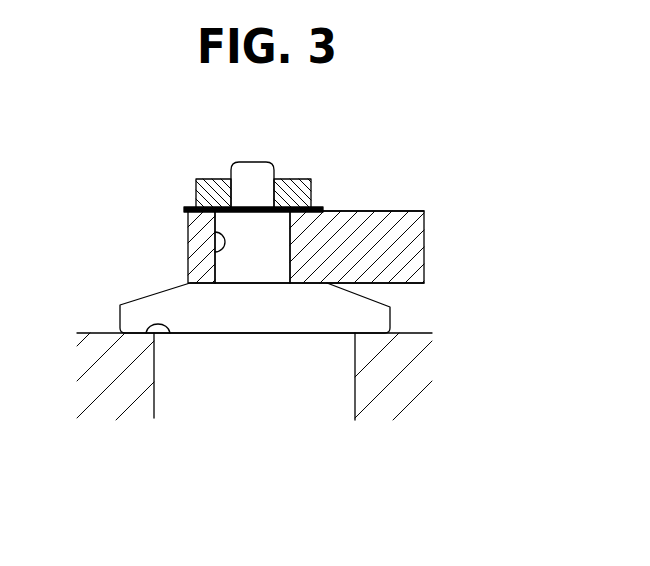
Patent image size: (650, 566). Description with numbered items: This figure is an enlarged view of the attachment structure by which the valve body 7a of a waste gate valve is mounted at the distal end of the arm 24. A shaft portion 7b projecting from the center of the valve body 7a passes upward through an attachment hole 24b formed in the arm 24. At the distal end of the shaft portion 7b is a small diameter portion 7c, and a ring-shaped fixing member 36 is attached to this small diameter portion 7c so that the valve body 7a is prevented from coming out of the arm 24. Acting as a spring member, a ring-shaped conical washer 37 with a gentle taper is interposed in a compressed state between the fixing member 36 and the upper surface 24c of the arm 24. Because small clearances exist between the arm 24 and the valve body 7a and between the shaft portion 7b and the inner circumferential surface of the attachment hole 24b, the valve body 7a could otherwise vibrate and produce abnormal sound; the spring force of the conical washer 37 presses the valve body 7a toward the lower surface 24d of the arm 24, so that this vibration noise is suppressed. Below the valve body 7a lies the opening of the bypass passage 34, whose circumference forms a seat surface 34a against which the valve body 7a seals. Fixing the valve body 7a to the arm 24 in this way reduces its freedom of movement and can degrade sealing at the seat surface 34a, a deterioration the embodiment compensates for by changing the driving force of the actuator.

The valve body 7a is at (309, 326).
The shaft portion 7b is at (278, 254).
The small diameter portion 7c is at (250, 168).
The arm 24 is at (412, 249).
The attachment hole 24b is at (200, 237).
The upper surface 24c is at (412, 210).
The lower surface 24d is at (412, 284).
The bypass passage 34 is at (193, 393).
The seat surface 34a is at (170, 333).
The fixing member 36 is at (212, 182).
The conical washer 37 is at (186, 207).